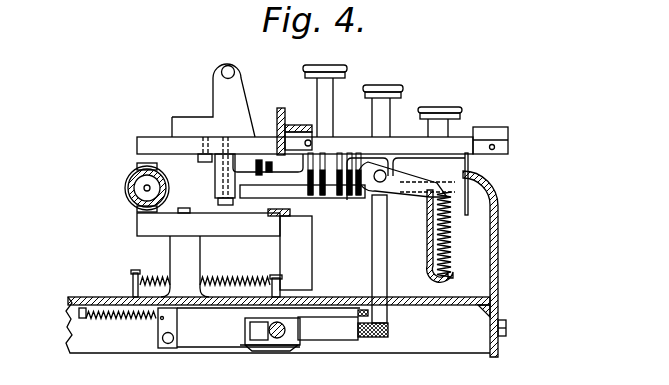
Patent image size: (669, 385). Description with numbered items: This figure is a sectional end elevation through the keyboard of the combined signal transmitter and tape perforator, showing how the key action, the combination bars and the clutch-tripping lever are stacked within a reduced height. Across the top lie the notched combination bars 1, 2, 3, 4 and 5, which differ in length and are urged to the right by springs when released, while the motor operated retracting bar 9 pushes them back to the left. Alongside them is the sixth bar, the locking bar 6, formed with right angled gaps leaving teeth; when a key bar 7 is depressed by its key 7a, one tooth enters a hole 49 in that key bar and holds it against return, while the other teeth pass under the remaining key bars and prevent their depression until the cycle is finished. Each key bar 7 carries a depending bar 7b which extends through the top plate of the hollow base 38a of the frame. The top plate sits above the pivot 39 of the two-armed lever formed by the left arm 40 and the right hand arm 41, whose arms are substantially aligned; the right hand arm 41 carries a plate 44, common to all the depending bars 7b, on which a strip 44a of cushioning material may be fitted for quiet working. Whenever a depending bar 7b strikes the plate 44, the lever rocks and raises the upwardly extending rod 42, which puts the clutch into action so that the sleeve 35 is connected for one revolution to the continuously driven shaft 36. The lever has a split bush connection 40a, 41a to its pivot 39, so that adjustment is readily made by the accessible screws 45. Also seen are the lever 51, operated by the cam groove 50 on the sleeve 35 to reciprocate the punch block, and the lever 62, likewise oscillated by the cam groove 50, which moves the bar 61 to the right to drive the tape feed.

The combination bar 1 is at (383, 100).
The combination bar 2 is at (346, 153).
The combination bar 3 is at (339, 152).
The combination bar 4 is at (283, 135).
The combination bar 5 is at (258, 135).
The locking bar 6 is at (302, 164).
The key bar 7 is at (427, 163).
The key 7a is at (450, 108).
The depending bar 7b is at (378, 247).
The retracting bar 9 is at (295, 190).
The sleeve 35 is at (145, 188).
The shaft 36 is at (150, 188).
The hollow base 38a is at (489, 330).
The pivot 39 is at (284, 323).
The lever arm 40 is at (228, 340).
The split bush connection 40a is at (250, 350).
The lever arm 41 is at (333, 325).
The split bush connection 41a is at (264, 318).
The upwardly extending rod 42 is at (170, 326).
The plate 44 is at (382, 338).
The strip of cushioning material 44a is at (398, 329).
The screws 45 is at (276, 350).
The hole 49 is at (307, 125).
The cam 50 is at (136, 208).
The lever 51 is at (305, 171).
The bar 61 is at (290, 249).
The lever 62 is at (208, 252).